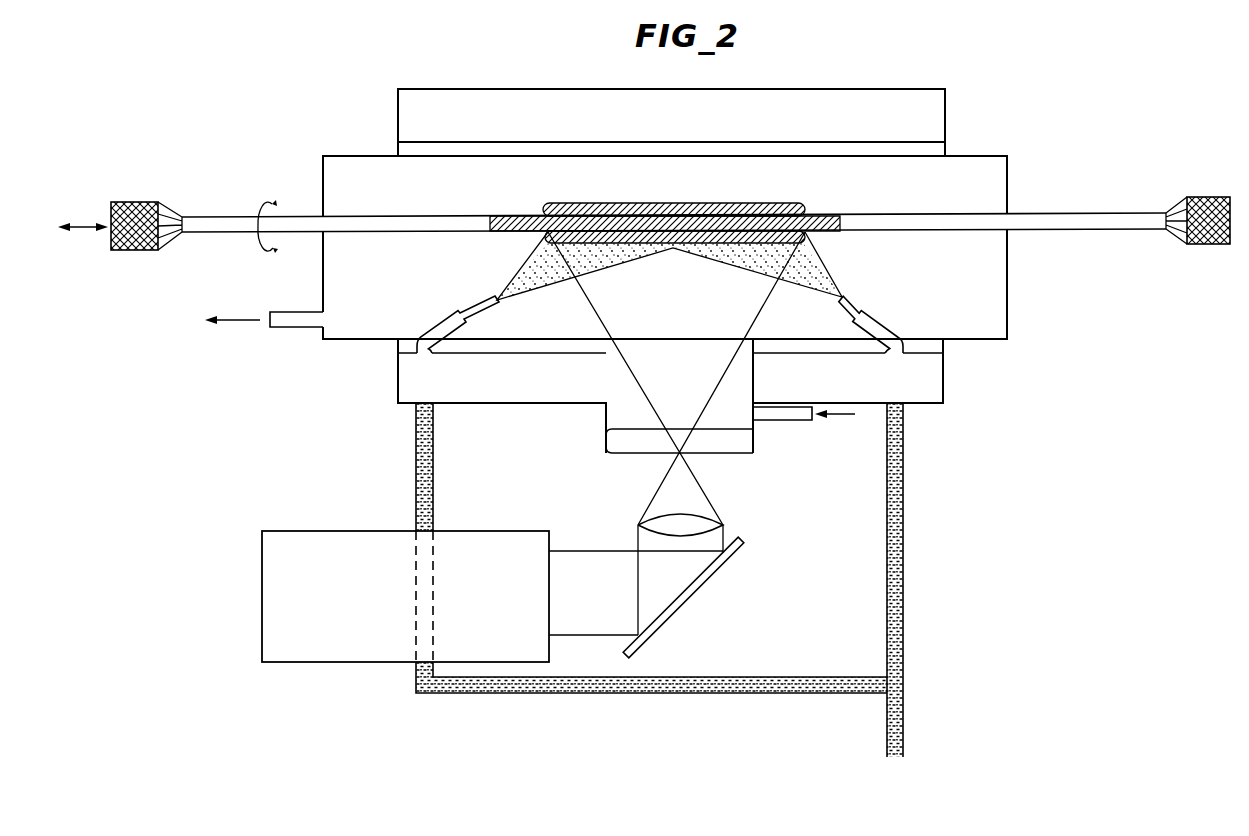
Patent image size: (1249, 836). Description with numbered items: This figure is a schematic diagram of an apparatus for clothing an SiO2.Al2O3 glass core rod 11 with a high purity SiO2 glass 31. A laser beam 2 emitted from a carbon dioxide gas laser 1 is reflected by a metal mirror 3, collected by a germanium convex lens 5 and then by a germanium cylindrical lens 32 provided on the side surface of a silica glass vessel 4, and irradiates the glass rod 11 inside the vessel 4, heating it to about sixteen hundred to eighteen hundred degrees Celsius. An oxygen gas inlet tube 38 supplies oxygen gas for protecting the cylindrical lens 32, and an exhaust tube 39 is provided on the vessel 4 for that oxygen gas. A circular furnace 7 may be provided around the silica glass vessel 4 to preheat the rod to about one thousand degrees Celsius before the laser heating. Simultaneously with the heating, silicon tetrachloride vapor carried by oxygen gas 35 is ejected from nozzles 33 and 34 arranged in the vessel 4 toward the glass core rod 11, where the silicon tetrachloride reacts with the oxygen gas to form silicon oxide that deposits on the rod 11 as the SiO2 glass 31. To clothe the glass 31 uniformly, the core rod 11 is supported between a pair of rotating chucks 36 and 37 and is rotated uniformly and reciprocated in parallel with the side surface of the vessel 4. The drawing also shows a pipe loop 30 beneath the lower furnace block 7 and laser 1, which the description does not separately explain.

The carbon dioxide gas laser 1 is at (490, 546).
The laser beam 2 is at (593, 568).
The metal mirror 3 is at (725, 560).
The silica glass vessel 4 is at (1007, 339).
The germanium convex lens 5 is at (710, 522).
The circular furnace 7 is at (932, 118).
The SiO2.Al2O3 glass core rod 11 is at (685, 216).
The return pipe 30 is at (905, 518).
The SiO2 glass 31 is at (776, 203).
The germanium cylindrical lens 32 is at (738, 446).
The nozzle 33 is at (443, 322).
The nozzle 34 is at (887, 328).
The silicon tetrachloride vapor carried by oxygen gas 35 is at (728, 258).
The rotating chuck 36 is at (148, 205).
The rotating chuck 37 is at (1187, 199).
The oxygen gas inlet tube 38 is at (795, 422).
The exhaust tube 39 is at (282, 330).